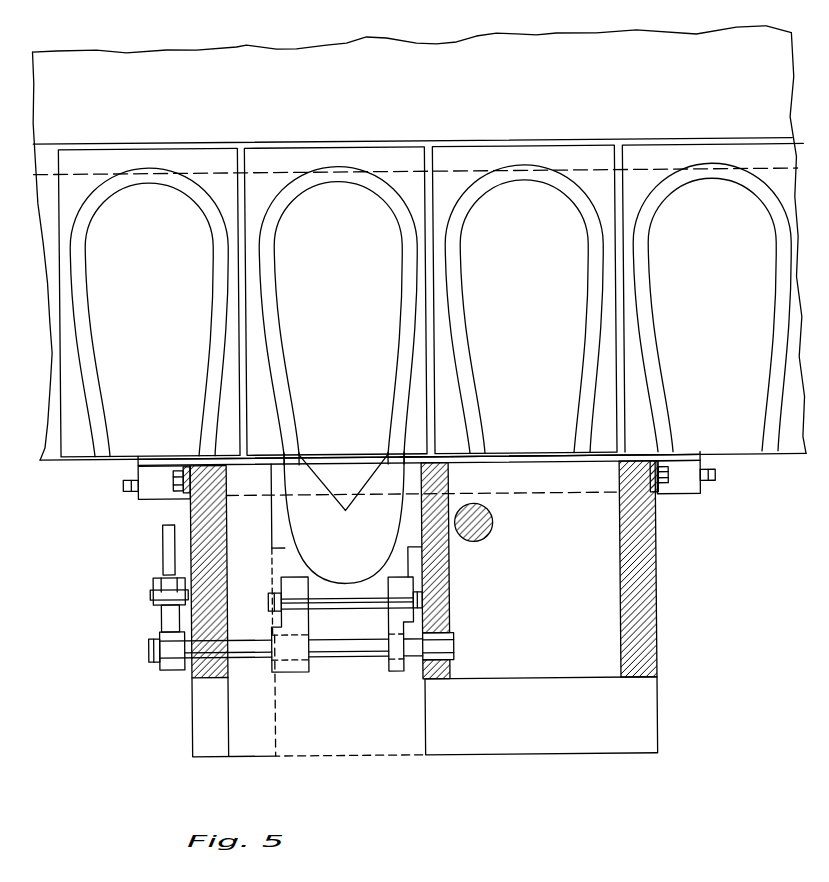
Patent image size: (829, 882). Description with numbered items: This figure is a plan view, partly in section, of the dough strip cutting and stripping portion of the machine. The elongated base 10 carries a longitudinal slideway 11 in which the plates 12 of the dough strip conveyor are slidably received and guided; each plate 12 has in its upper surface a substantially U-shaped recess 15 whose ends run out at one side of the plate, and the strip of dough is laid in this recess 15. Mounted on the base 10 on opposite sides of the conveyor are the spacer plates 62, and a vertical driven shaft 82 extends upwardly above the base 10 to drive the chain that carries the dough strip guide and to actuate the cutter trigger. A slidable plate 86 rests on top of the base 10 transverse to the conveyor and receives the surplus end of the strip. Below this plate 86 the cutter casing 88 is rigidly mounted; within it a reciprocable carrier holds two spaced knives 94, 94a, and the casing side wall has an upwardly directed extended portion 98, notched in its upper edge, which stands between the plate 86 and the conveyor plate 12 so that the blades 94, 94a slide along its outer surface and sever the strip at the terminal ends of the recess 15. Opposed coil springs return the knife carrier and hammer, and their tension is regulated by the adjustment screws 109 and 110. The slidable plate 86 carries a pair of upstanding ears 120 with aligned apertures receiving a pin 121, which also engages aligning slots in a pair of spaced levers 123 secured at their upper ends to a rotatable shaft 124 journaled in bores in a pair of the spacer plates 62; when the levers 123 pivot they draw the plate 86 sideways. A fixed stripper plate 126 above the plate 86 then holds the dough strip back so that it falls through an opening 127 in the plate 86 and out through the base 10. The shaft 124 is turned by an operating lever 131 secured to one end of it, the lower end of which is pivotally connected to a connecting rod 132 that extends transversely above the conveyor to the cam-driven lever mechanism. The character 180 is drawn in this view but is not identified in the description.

The base 10 is at (458, 46).
The longitudinal slideway 11 is at (728, 140).
The plate 12 is at (262, 157).
The U-shaped recess 15 is at (103, 410).
The spacer plate 62 is at (444, 623).
The vertical driven shaft 82 is at (494, 528).
The slidable plate 86 is at (273, 716).
The casing 88 is at (568, 495).
The cutting blade 94 is at (318, 457).
The cutting blade 94a is at (418, 452).
The extended portion 98 is at (347, 462).
The adjustment screw 109 is at (133, 489).
The adjustment screw 110 is at (707, 481).
The upstanding ear 120 is at (281, 588).
The pin 121 is at (343, 594).
The lever 123 is at (293, 672).
The rotatable shaft 124 is at (342, 657).
The stripper plate 126 is at (290, 575).
The opening 127 is at (356, 488).
The operating lever 131 is at (167, 612).
The connecting rod 132 is at (167, 547).
The strip end 180 is at (295, 460).